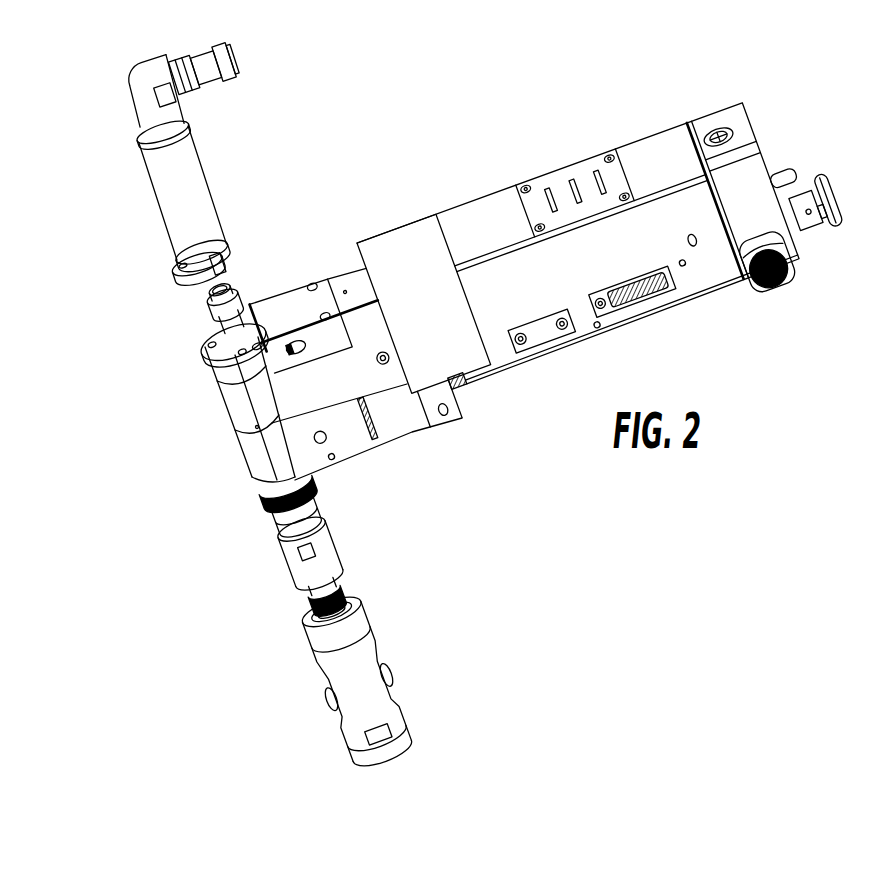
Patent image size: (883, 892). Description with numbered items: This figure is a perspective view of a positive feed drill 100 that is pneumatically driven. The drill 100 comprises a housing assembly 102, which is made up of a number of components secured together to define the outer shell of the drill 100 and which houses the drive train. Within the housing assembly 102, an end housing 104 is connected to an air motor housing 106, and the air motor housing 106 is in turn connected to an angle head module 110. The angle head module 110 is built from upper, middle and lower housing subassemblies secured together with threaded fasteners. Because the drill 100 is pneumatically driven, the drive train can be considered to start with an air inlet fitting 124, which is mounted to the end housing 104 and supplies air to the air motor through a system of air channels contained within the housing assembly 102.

The positive feed drill 100 is at (580, 516).
The housing assembly 102 is at (507, 146).
The end housing 104 is at (755, 112).
The air motor housing 106 is at (660, 160).
The angle head module 110 is at (375, 234).
The air inlet fitting 124 is at (777, 298).